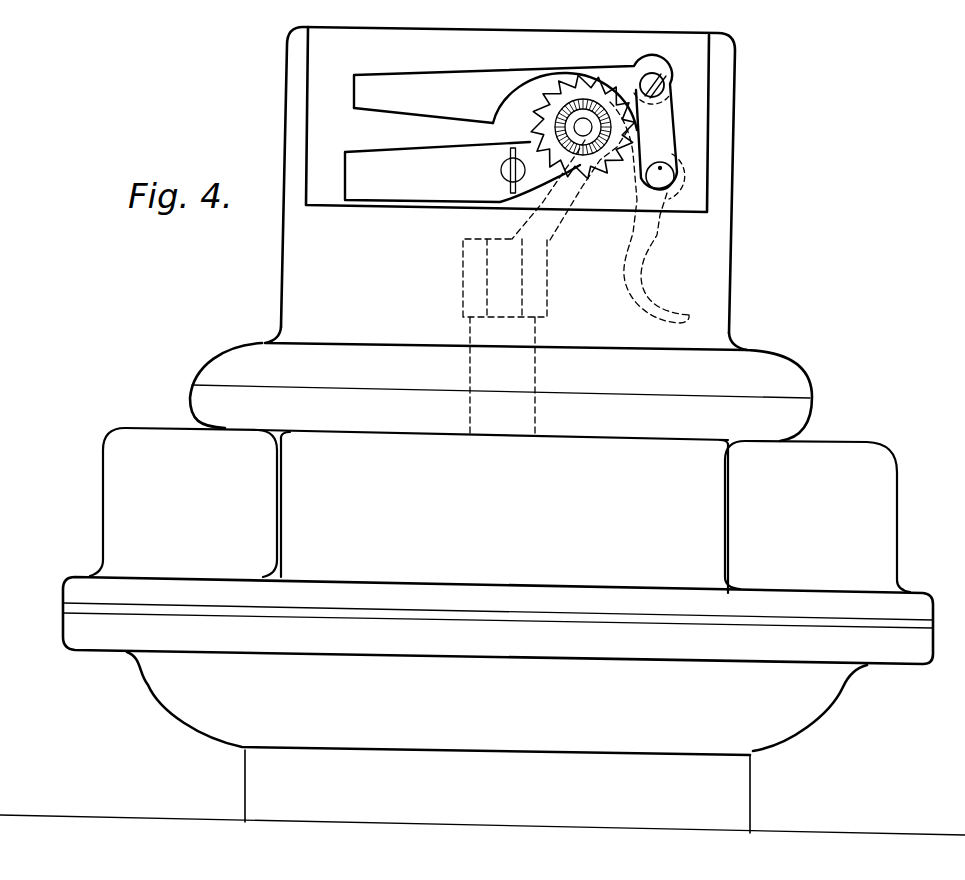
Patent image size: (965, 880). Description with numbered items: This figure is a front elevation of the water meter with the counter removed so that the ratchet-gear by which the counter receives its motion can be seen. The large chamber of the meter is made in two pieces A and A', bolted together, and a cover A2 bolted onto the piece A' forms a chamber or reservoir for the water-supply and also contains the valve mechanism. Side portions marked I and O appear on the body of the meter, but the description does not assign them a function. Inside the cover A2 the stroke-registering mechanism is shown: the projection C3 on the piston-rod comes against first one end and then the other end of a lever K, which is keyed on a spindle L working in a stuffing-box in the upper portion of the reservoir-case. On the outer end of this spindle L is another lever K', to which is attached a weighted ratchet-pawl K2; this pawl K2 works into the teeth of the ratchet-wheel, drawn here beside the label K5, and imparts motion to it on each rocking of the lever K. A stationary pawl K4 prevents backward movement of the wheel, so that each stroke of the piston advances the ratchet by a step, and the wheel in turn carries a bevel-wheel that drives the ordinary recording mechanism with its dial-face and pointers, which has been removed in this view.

The chamber piece A is at (497, 742).
The chamber piece A' is at (504, 512).
The cover A2 is at (508, 180).
The side block I is at (183, 502).
The side block O is at (817, 516).
The lever K is at (649, 212).
The lever K' is at (652, 106).
The weighted ratchet-pawl K2 is at (515, 122).
The stationary pawl K4 is at (462, 172).
The ratchet wheel K5 is at (575, 127).
The spindle L is at (665, 176).
The projection C3 is at (545, 282).